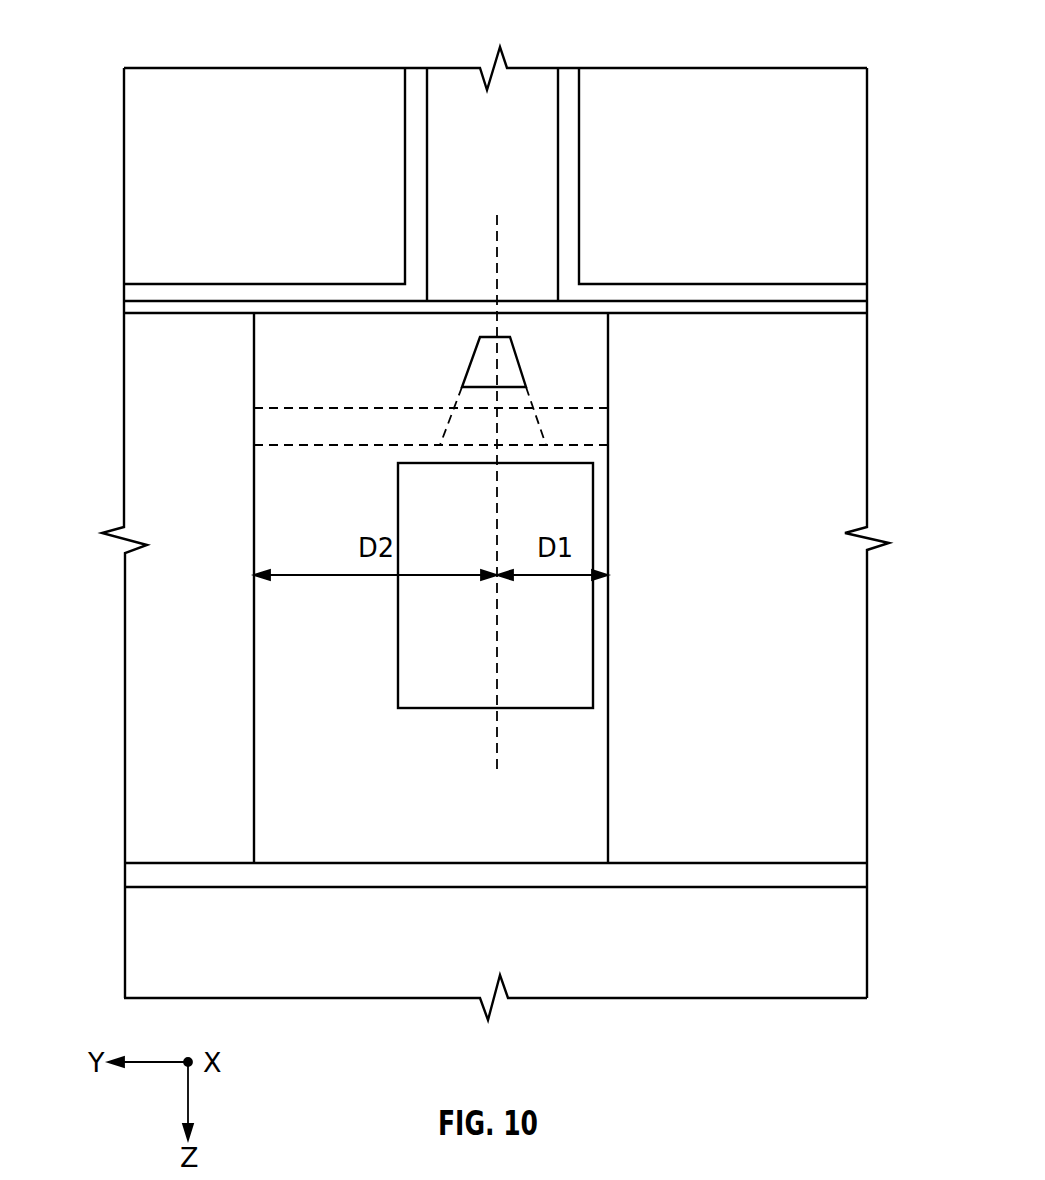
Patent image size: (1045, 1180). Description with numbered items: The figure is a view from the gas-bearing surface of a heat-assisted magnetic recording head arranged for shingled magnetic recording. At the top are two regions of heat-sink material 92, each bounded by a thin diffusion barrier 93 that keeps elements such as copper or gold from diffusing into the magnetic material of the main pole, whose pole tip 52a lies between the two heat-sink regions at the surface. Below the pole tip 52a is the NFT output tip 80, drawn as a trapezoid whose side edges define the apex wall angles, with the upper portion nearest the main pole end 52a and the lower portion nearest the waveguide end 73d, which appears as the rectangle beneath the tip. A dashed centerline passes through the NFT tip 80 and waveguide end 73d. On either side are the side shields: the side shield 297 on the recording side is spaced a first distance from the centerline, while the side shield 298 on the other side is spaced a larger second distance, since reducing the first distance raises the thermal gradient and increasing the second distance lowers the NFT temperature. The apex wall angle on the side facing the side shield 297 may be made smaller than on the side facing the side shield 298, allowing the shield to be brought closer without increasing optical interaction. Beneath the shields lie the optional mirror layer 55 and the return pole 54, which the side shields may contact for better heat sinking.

The heat-sink material 92 is at (245, 90).
The diffusion barrier 93 is at (412, 88).
The main pole tip 52a is at (522, 106).
The side shield 297 is at (811, 413).
The side shield 298 is at (172, 413).
The NFT output tip 80 is at (508, 371).
The waveguide end 73d is at (430, 658).
The mirror layer 55 is at (848, 878).
The return pole 54 is at (840, 933).